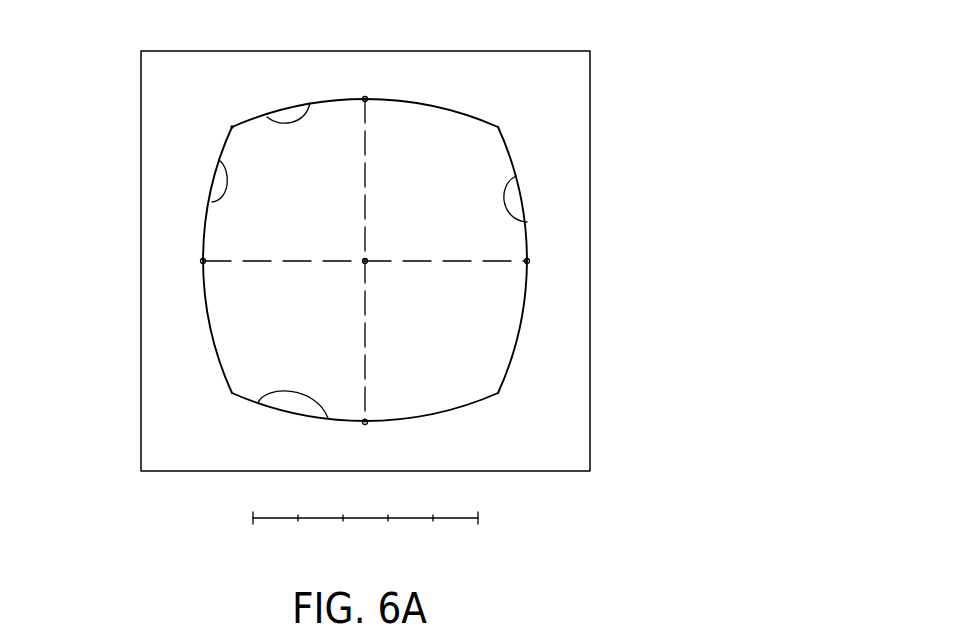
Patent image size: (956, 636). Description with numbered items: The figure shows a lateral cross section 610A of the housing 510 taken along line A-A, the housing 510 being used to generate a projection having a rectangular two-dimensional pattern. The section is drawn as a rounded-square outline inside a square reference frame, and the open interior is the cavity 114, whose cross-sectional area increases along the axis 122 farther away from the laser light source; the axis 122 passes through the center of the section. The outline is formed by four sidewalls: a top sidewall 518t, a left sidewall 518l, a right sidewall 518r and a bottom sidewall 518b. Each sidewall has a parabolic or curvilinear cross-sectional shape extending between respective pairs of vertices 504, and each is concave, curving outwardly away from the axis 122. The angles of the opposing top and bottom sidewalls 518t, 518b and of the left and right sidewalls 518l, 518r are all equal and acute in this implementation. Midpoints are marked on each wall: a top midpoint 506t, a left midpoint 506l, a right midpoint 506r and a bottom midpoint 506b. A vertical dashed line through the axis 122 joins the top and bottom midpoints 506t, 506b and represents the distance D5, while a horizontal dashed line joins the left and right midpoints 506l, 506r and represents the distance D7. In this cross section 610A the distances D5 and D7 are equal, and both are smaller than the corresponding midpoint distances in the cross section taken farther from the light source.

The lateral cross section 610A is at (693, 64).
The housing 510 is at (552, 431).
The cavity 114 is at (472, 140).
The distance D5 is at (365, 163).
The distance D7 is at (245, 262).
The axis 122 is at (365, 261).
The vertices 504 is at (232, 127).
The top sidewall 518t is at (310, 103).
The left sidewall 518l is at (212, 202).
The right sidewall 518r is at (527, 222).
The bottom sidewall 518b is at (260, 403).
The midpoint of top sidewall 506t is at (365, 98).
The midpoint of left sidewall 506l is at (203, 261).
The midpoint of right sidewall 506r is at (527, 261).
The midpoint of bottom sidewall 506b is at (365, 422).